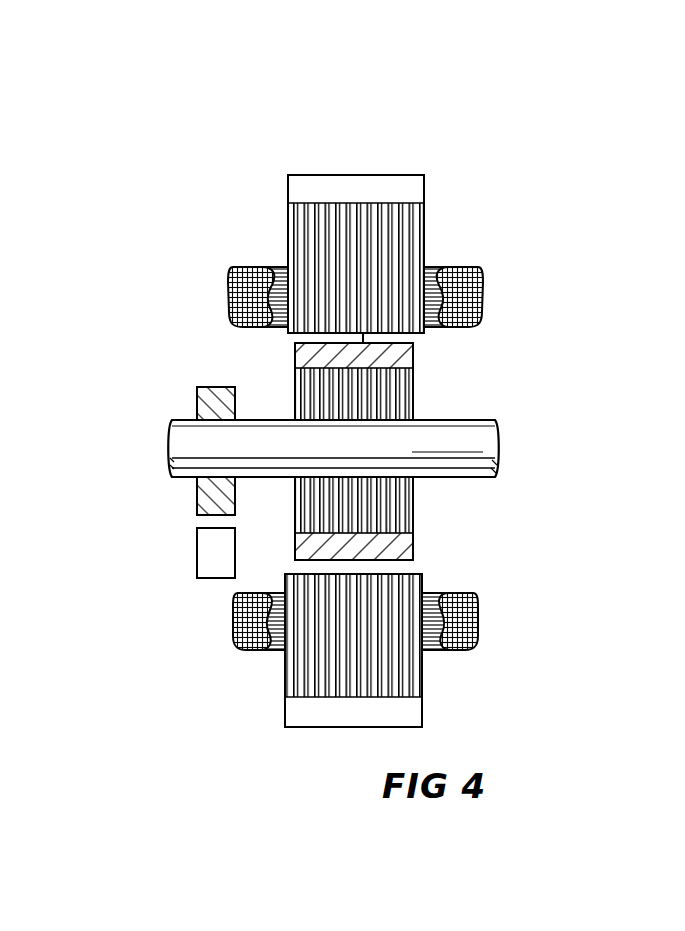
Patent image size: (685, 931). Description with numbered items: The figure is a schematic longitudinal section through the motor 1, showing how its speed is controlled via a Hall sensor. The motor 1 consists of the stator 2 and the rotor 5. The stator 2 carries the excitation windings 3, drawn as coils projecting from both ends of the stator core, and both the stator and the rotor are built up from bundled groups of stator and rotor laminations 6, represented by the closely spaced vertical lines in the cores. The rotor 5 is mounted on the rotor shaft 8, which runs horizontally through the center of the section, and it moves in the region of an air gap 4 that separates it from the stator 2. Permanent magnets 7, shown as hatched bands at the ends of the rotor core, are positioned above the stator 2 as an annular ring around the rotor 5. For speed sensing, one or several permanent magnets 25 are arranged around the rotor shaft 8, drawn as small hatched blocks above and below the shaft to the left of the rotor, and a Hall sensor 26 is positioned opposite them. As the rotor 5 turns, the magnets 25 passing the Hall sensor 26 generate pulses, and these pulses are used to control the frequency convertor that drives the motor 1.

The motor 1 is at (514, 213).
The stator 2 is at (408, 225).
The excitation windings 3 is at (480, 292).
The air gap 4 is at (413, 337).
The rotor 5 is at (497, 403).
The stator and rotor laminations 6 is at (398, 505).
The permanent magnets 7 is at (410, 350).
The rotor shaft 8 is at (480, 443).
The permanent magnets 25 is at (205, 402).
The Hall sensor 26 is at (212, 565).